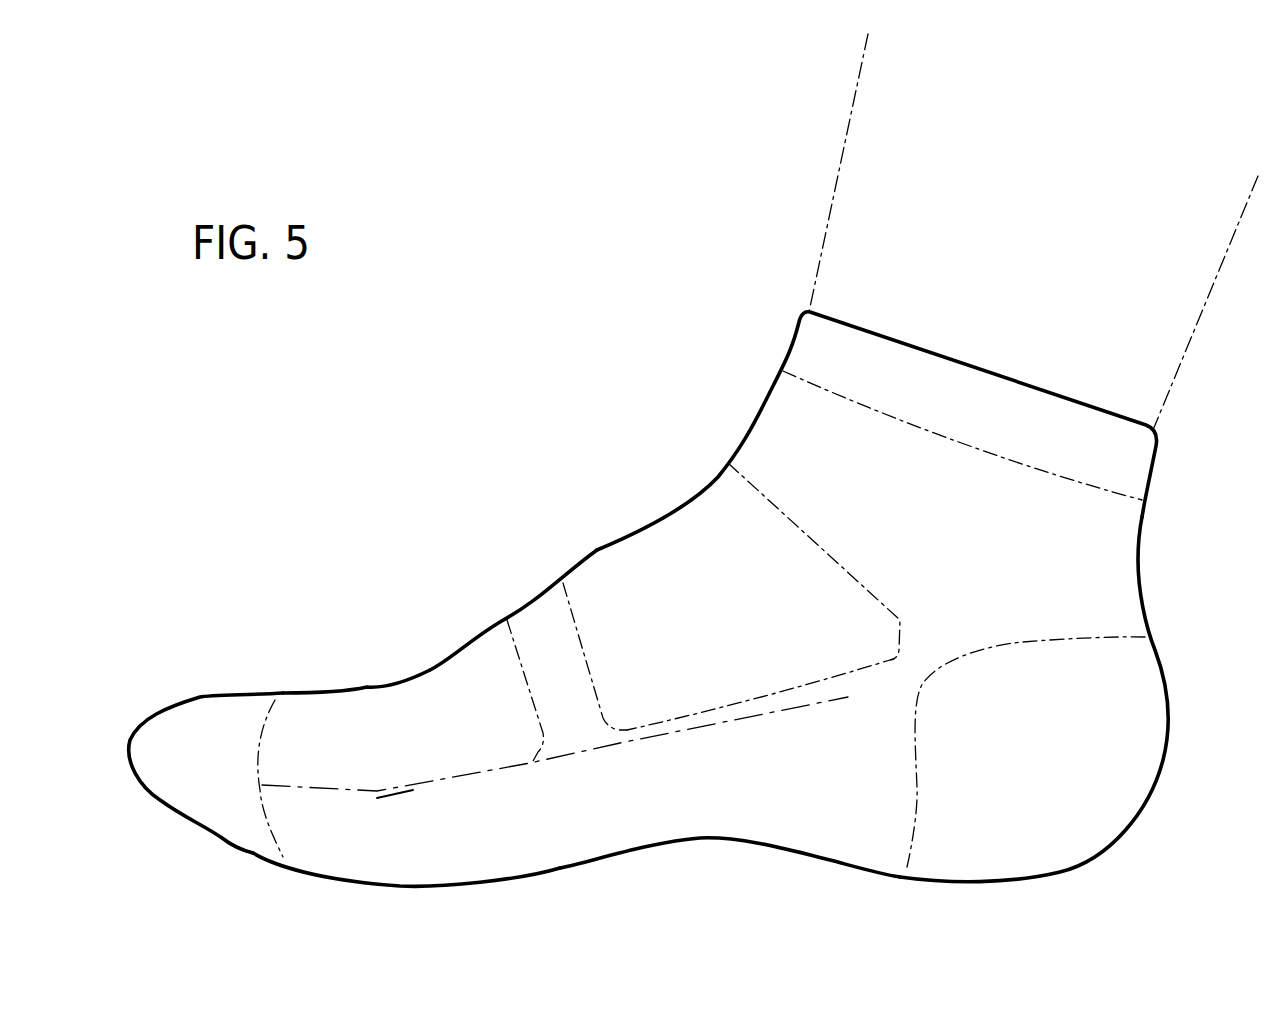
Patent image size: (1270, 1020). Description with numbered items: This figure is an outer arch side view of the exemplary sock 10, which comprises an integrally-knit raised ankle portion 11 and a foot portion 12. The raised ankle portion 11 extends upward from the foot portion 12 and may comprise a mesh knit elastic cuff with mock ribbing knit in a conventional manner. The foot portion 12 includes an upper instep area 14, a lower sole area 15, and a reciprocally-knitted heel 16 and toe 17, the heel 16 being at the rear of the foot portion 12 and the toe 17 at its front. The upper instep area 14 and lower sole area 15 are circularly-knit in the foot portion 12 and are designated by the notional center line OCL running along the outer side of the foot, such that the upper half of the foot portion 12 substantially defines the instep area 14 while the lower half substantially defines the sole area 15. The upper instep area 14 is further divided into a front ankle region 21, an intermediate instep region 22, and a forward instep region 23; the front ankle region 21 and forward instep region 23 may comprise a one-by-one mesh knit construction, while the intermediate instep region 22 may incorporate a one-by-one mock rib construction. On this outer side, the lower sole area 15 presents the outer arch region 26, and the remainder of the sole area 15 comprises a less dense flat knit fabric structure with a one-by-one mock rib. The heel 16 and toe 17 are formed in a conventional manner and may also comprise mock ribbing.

The sock 10 is at (319, 511).
The raised ankle portion 11 is at (723, 384).
The foot portion 12 is at (298, 678).
The upper instep area 14 is at (590, 534).
The lower sole area 15 is at (240, 866).
The heel 16 is at (1093, 727).
The toe 17 is at (175, 730).
The front ankle region 21 is at (670, 527).
The intermediate instep region 22 is at (533, 620).
The forward instep region 23 is at (423, 692).
The outer arch region 26 is at (592, 827).
The notional center line OCL is at (768, 713).